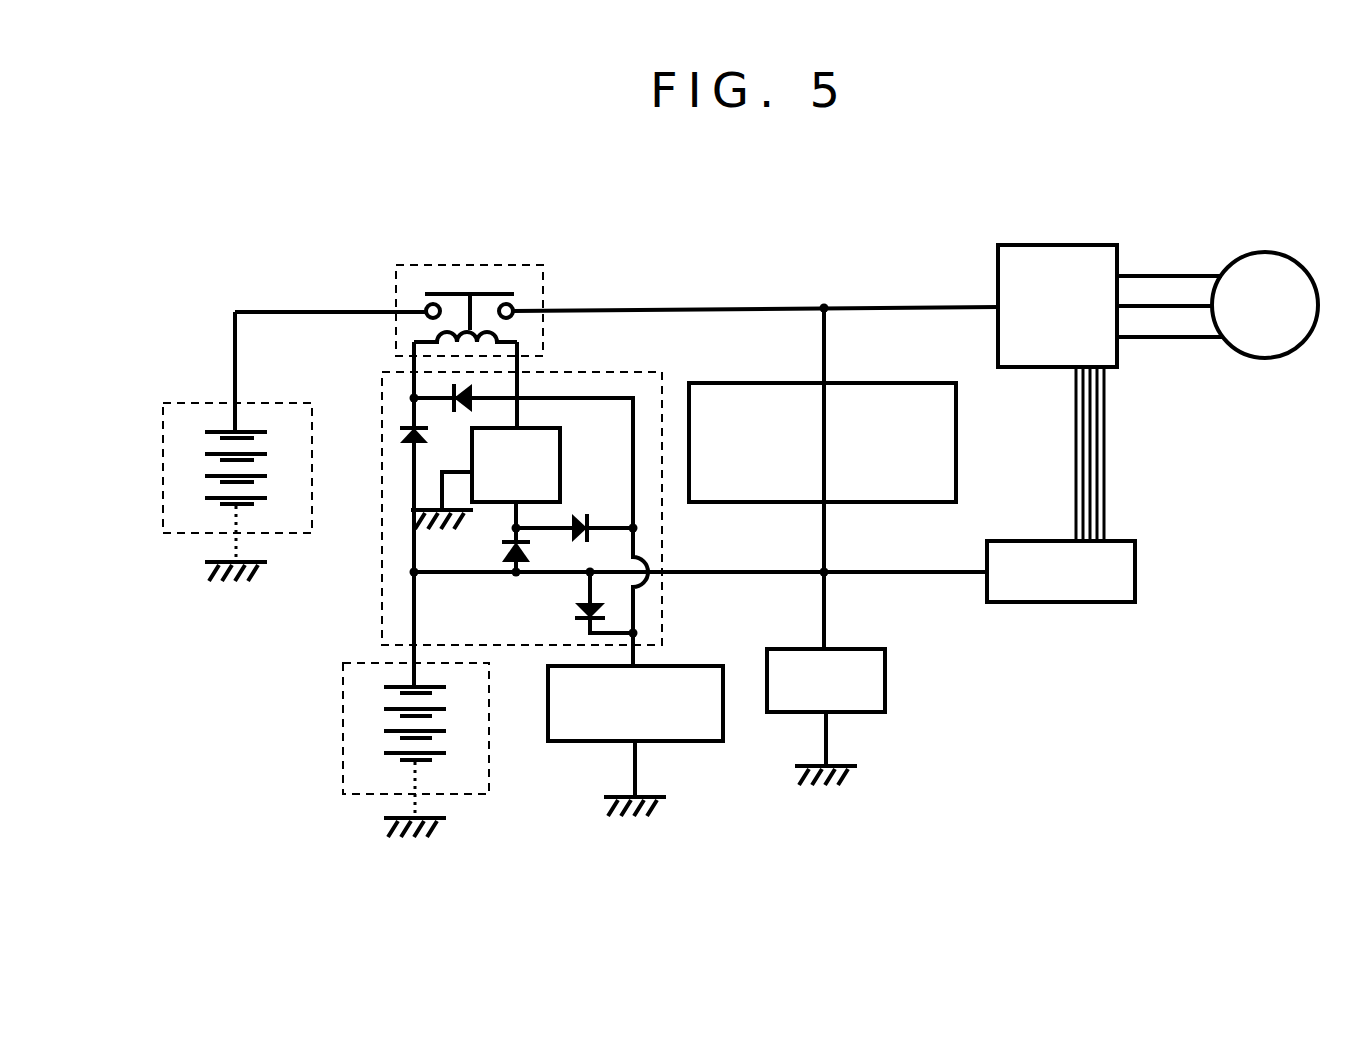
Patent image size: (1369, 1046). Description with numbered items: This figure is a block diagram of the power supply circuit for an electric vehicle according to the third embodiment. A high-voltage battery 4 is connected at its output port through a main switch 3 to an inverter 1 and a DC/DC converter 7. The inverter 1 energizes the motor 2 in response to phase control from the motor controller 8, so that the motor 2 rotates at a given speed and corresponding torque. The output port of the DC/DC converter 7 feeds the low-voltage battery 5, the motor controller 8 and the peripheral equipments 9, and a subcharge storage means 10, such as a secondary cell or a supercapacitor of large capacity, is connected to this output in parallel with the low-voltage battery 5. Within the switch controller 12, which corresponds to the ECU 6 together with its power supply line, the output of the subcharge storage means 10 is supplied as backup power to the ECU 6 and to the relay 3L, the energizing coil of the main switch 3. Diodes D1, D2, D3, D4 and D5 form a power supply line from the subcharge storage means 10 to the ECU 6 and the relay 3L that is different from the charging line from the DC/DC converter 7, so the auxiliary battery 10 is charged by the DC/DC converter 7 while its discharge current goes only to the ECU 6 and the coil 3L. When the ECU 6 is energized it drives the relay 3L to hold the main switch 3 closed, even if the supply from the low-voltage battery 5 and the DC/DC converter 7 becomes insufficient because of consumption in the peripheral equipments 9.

The inverter 1 is at (1067, 245).
The motor 2 is at (1262, 252).
The main switch 3 is at (543, 283).
The relay 3L is at (517, 330).
The high-voltage battery 4 is at (200, 402).
The low-voltage battery 5 is at (343, 738).
The ECU 6 is at (560, 465).
The DC/DC converter 7 is at (893, 383).
The motor controller 8 is at (1135, 575).
The peripheral equipments 9 is at (888, 685).
The subcharge storage means 10 is at (688, 741).
The switch controller 12 is at (382, 593).
The diode D1 is at (575, 612).
The diode D2 is at (582, 513).
The diode D3 is at (500, 552).
The diode D4 is at (462, 410).
The diode D5 is at (398, 436).